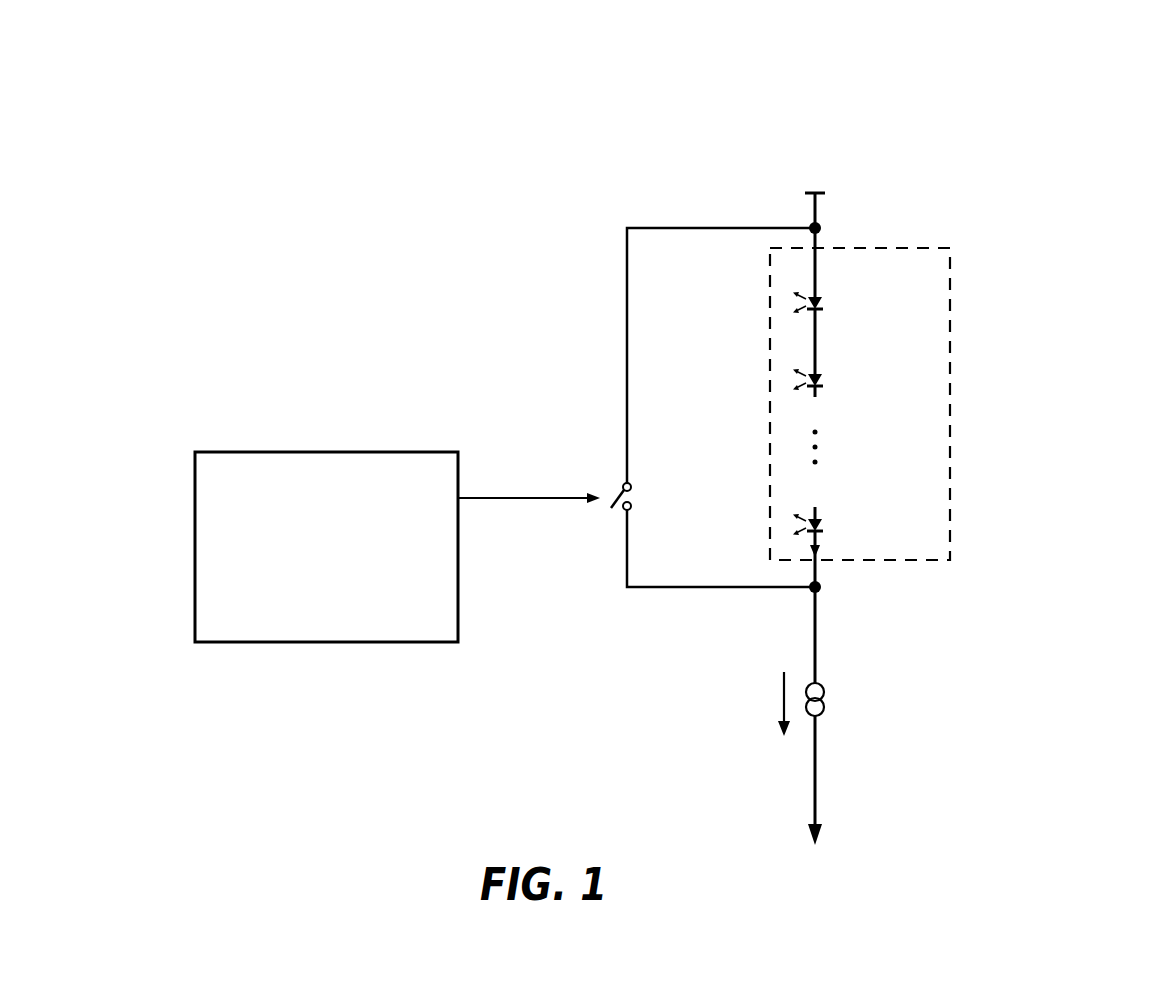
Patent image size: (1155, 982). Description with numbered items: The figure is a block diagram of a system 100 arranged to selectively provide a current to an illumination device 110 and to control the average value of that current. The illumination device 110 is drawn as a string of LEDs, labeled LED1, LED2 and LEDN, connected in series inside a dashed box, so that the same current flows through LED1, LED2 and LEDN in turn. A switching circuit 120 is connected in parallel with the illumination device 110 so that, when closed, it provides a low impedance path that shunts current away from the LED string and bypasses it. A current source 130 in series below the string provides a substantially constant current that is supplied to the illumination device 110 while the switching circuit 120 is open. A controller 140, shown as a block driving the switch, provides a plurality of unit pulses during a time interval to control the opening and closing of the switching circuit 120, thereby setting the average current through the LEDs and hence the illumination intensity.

The system 100 is at (855, 118).
The illumination device 110 is at (952, 200).
The first LED LED1 is at (822, 303).
The second LED LED2 is at (822, 380).
The Nth LED LEDN is at (822, 525).
The switching circuit 120 is at (631, 487).
The current source 130 is at (824, 694).
The controller 140 is at (397, 547).